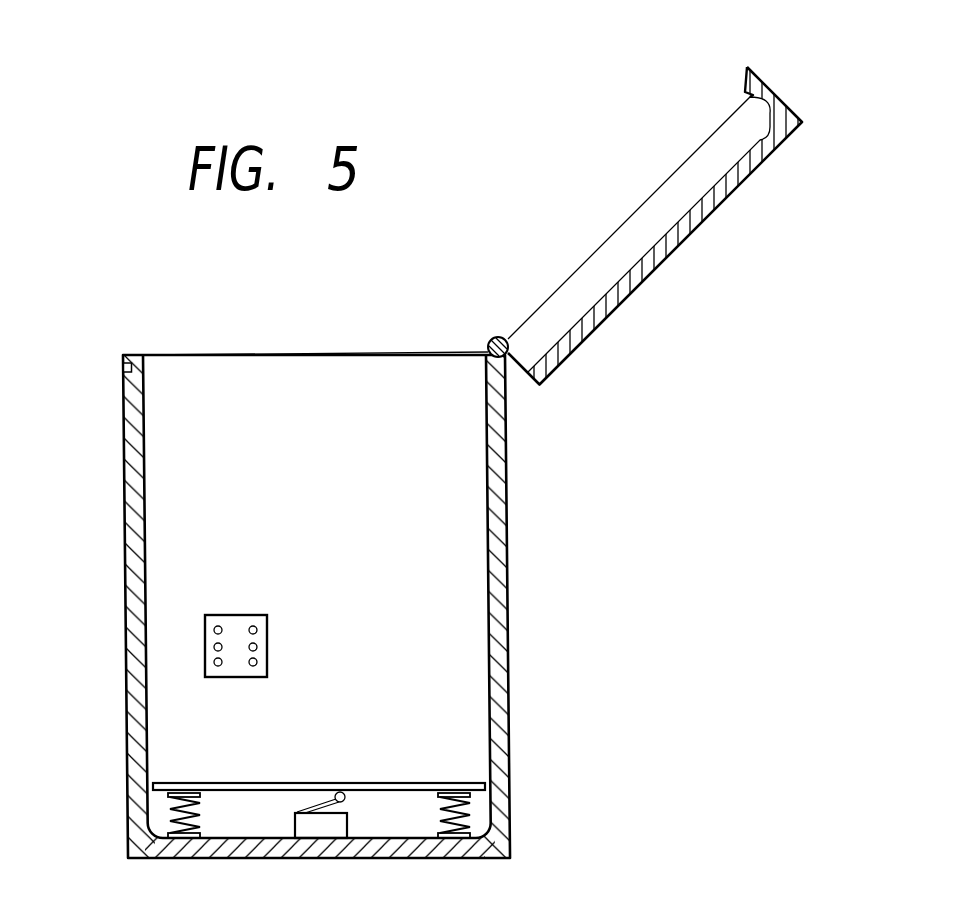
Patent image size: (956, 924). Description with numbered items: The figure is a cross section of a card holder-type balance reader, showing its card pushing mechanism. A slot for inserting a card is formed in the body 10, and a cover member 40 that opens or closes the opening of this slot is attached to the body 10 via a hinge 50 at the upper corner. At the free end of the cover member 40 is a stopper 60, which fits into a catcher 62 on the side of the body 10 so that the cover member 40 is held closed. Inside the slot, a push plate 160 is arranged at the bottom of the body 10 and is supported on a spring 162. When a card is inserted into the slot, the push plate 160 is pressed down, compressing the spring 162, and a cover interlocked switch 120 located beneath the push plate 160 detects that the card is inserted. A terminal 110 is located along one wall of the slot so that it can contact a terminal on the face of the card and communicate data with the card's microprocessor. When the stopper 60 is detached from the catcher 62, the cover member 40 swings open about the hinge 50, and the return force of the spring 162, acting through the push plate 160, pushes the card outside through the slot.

The body 10 is at (508, 576).
The cover member 40 is at (634, 292).
The hinge 50 is at (492, 337).
The stopper 60 is at (758, 68).
The catcher 62 is at (122, 370).
The terminal 110 is at (268, 630).
The cover interlocked switch 120 is at (326, 832).
The push plate 160 is at (308, 782).
The spring 162 is at (165, 823).